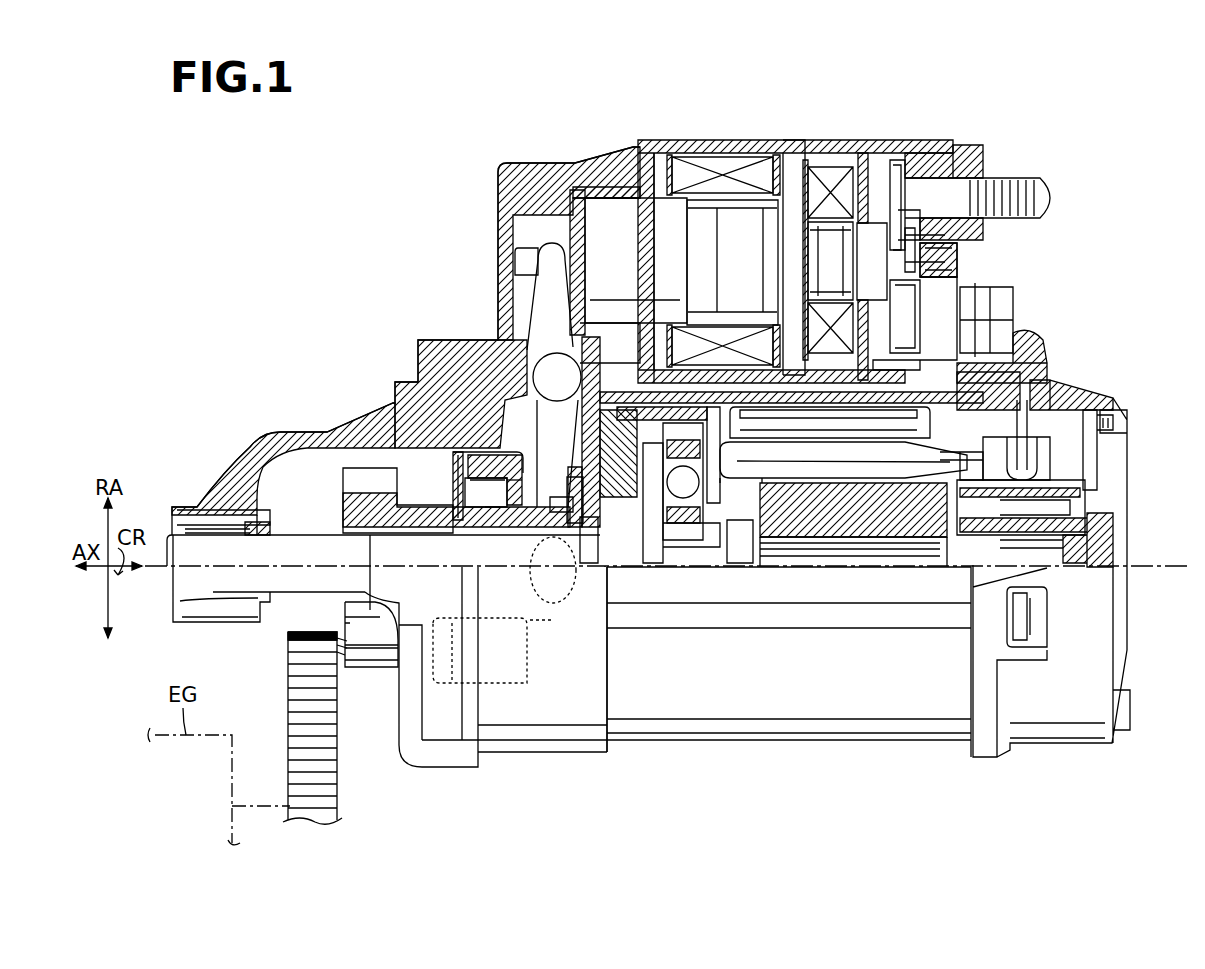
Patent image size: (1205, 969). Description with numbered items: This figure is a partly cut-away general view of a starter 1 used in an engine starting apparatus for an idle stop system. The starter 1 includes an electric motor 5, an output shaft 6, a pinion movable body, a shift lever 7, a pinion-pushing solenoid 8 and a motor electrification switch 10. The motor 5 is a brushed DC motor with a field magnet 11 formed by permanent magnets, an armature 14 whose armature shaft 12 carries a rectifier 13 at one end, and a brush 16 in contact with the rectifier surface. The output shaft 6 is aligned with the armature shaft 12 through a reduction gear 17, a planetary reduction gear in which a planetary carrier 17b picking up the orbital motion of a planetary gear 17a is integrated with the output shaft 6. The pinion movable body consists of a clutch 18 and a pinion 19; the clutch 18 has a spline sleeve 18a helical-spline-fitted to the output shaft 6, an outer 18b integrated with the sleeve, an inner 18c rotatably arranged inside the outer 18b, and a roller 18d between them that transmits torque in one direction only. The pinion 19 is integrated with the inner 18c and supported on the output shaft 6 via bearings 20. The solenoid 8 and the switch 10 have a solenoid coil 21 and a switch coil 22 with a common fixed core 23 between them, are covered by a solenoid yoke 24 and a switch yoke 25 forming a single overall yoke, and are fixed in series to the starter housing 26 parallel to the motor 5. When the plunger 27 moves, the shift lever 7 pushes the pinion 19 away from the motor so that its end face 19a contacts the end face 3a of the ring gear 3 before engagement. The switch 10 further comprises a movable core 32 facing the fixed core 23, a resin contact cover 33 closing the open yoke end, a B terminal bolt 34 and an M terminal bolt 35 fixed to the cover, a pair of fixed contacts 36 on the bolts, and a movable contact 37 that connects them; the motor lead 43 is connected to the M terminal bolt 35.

The starter 1 is at (505, 125).
The ring gear 3 is at (293, 770).
The end face 3a is at (345, 670).
The electric motor 5 is at (918, 748).
The output shaft 6 is at (307, 548).
The shift lever 7 is at (543, 330).
The pinion-pushing solenoid 8 is at (652, 140).
The motor electrification switch 10 is at (880, 132).
The field magnet 11 is at (810, 418).
The armature shaft 12 is at (848, 553).
The rectifier 13 is at (1057, 482).
The armature 14 is at (877, 520).
The brush 16 is at (1057, 470).
The reduction gear 17 is at (702, 550).
The planetary gear 17a is at (680, 545).
The planetary carrier 17b is at (652, 553).
The clutch 18 is at (465, 448).
The spline sleeve 18a is at (565, 555).
The outer 18b is at (517, 540).
The inner 18c is at (492, 545).
The roller 18d is at (476, 560).
The pinion 19 is at (362, 480).
The end face 19a is at (337, 642).
The bearings 20 is at (422, 615).
The solenoid coil 21 is at (720, 165).
The switch coil 22 is at (823, 200).
The fixed core 23 is at (790, 160).
The solenoid yoke 24 is at (690, 158).
The switch yoke 25 is at (840, 140).
The starter housing 26 is at (505, 210).
The plunger 27 is at (602, 205).
The movable core 32 is at (878, 235).
The contact cover 33 is at (978, 153).
The B terminal bolt 34 is at (1035, 190).
The M terminal bolt 35 is at (998, 322).
The fixed contacts 36 is at (905, 202).
The movable contact 37 is at (957, 253).
The motor lead 43 is at (1023, 350).